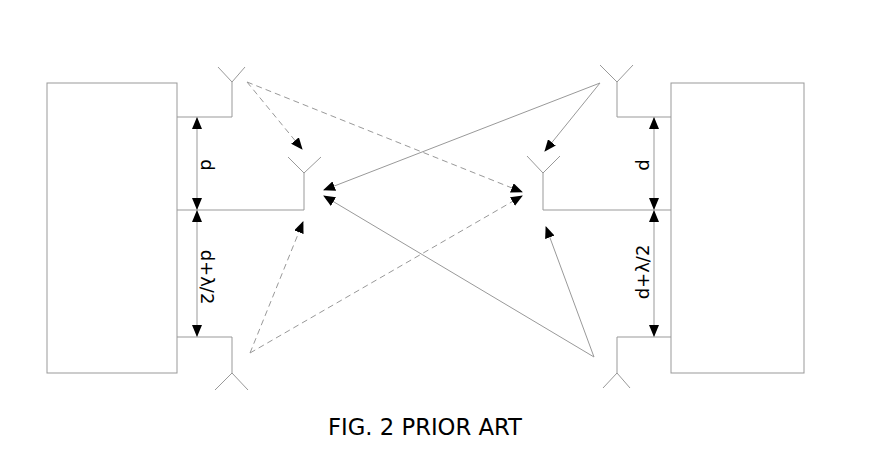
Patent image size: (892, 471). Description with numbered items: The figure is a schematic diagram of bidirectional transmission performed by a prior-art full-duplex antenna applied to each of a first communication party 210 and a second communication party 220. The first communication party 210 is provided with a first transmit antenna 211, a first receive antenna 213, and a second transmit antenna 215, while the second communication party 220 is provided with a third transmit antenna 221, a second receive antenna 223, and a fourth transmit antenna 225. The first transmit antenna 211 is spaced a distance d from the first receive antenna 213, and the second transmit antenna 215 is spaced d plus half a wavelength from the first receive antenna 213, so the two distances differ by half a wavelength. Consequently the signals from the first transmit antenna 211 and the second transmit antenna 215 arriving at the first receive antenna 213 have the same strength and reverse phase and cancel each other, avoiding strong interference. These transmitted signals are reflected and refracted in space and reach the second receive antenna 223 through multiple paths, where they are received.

The first communication party 210 is at (160, 83).
The first transmit antenna 211 is at (233, 65).
The first receive antenna 213 is at (288, 158).
The second transmit antenna 215 is at (224, 335).
The second communication party 220 is at (687, 83).
The third transmit antenna 221 is at (615, 63).
The second receive antenna 223 is at (560, 157).
The fourth transmit antenna 225 is at (623, 335).